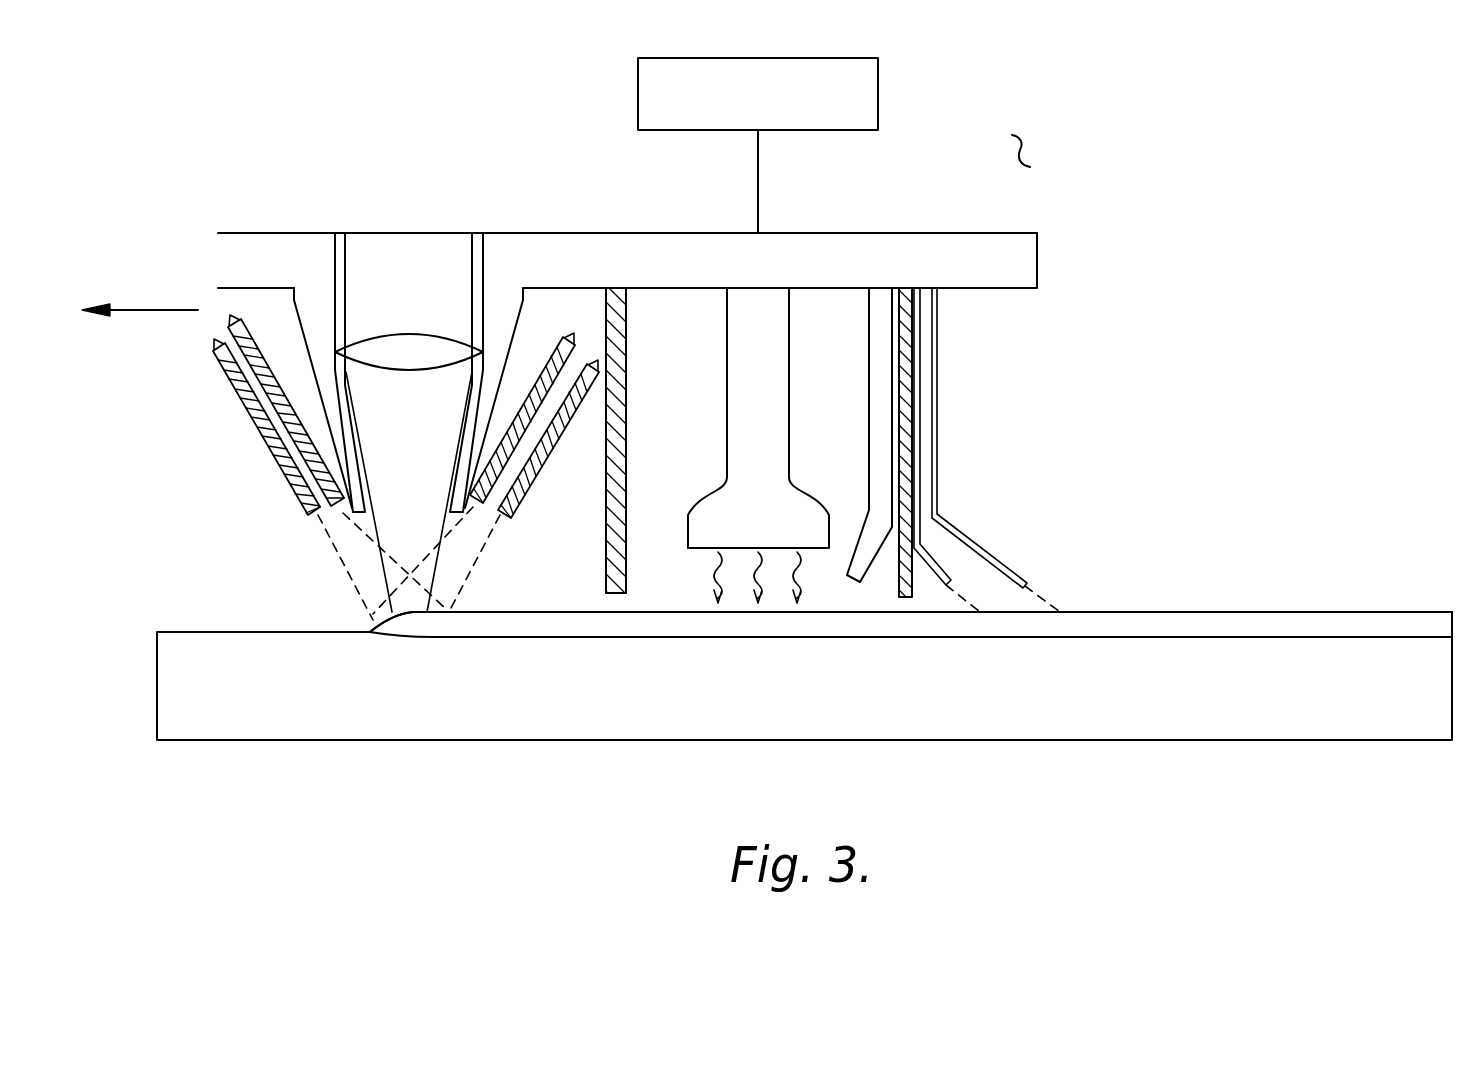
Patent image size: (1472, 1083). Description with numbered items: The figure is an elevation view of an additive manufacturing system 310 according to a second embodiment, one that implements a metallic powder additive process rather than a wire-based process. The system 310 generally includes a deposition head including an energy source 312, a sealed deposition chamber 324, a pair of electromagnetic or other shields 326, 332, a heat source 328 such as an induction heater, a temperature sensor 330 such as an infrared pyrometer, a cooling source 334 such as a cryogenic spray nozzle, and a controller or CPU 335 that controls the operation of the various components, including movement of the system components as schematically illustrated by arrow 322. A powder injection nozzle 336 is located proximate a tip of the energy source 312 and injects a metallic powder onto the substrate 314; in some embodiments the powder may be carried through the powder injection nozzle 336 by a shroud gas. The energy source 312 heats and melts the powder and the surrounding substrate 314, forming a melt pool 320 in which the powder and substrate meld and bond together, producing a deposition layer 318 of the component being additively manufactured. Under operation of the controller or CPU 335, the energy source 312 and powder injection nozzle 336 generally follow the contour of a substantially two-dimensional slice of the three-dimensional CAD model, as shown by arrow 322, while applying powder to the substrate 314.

The additive manufacturing system 310 is at (262, 157).
The energy source 312 is at (420, 248).
The substrate 314 is at (520, 697).
The deposition layer 318 is at (1220, 623).
The melt pool 320 is at (410, 623).
The arrow 322 is at (150, 310).
The sealed deposition chamber 324 is at (1020, 150).
The shield 326 is at (620, 325).
The heat source 328 is at (777, 442).
The temperature sensor 330 is at (878, 318).
The shield 332 is at (905, 397).
The cooling source 334 is at (948, 545).
The controller or CPU 335 is at (872, 77).
The powder injection nozzle 336 is at (272, 440).